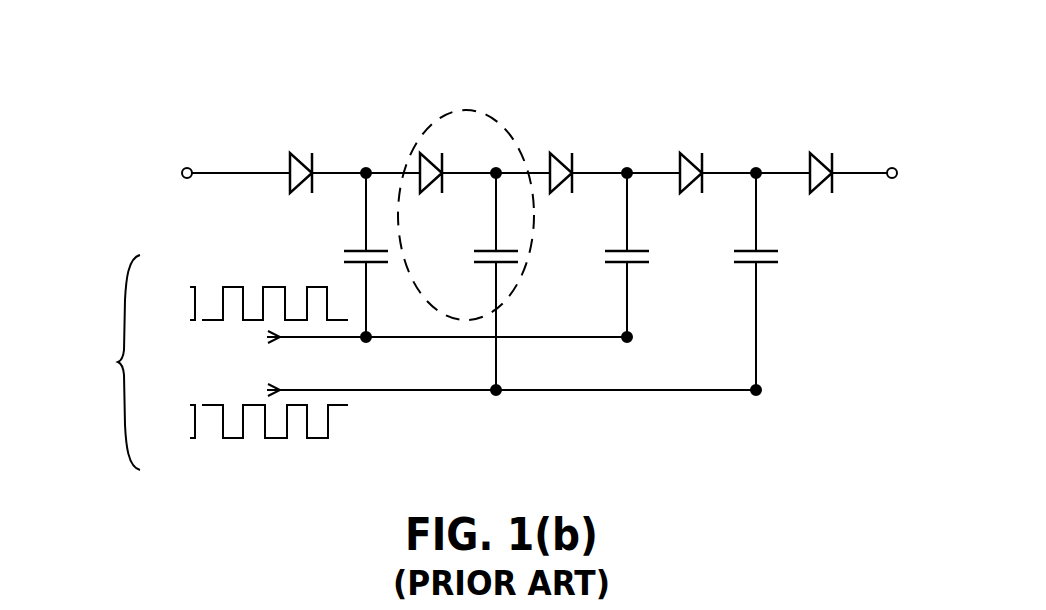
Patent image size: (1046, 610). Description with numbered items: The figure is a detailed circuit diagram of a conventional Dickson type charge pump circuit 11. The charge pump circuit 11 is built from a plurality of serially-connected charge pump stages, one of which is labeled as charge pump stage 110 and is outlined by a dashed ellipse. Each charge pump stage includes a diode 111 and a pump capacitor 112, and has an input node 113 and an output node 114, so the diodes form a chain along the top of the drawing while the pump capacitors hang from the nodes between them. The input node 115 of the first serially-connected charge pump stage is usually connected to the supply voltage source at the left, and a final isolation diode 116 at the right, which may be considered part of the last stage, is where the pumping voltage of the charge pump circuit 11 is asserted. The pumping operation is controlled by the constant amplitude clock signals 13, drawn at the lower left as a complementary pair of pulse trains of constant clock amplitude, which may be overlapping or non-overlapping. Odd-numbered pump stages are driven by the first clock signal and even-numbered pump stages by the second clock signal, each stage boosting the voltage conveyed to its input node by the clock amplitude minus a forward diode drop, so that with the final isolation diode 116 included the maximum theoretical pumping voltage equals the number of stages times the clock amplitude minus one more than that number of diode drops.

The charge pump circuit 11 is at (843, 98).
The constant amplitude clock signals 13 is at (418, 362).
The charge pump stage 110 is at (480, 111).
The diode 111 is at (430, 194).
The pump capacitor 112 is at (473, 259).
The input node 113 is at (388, 171).
The output node 114 is at (538, 171).
The input node of the first charge pump stage 115 is at (250, 171).
The final isolation diode 116 is at (820, 194).